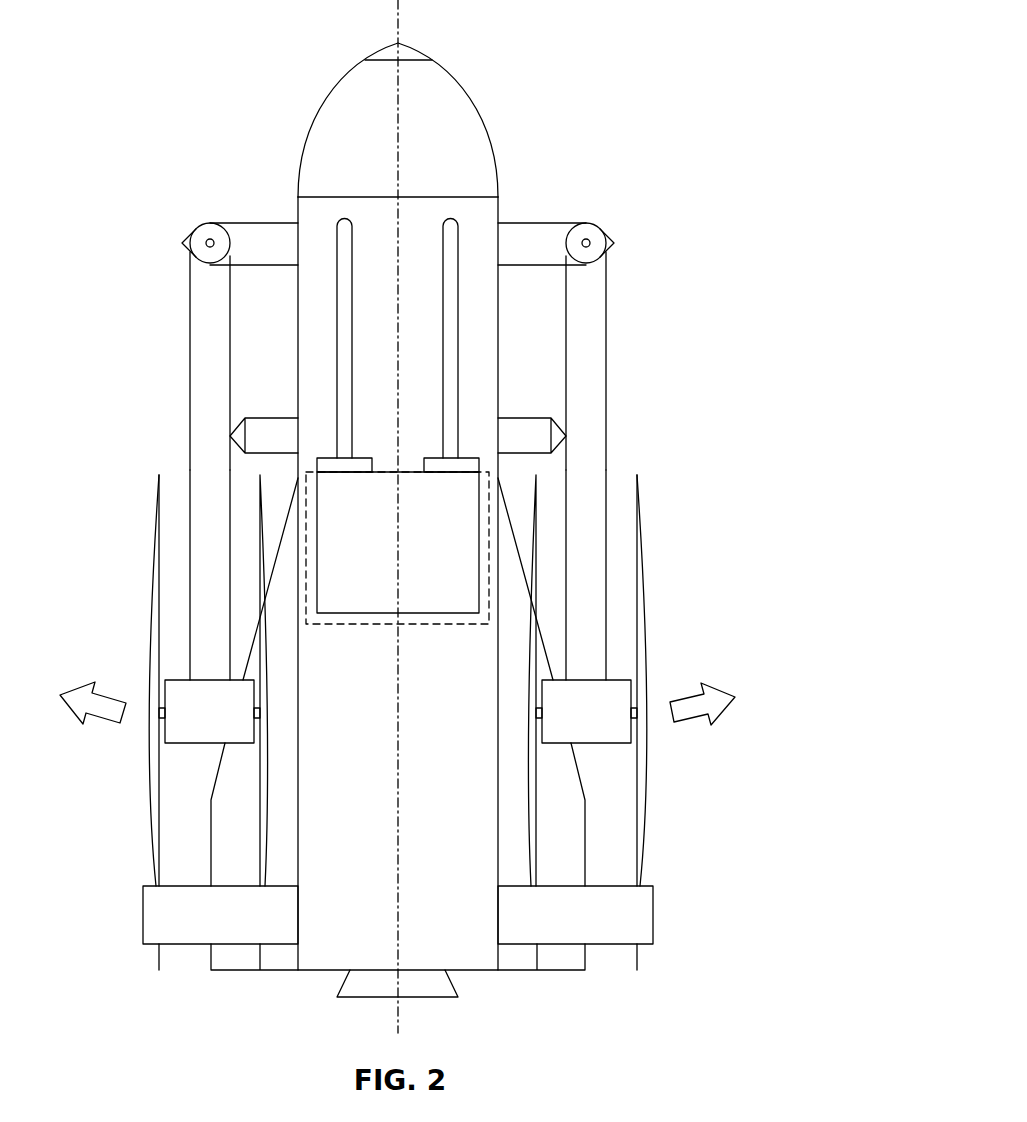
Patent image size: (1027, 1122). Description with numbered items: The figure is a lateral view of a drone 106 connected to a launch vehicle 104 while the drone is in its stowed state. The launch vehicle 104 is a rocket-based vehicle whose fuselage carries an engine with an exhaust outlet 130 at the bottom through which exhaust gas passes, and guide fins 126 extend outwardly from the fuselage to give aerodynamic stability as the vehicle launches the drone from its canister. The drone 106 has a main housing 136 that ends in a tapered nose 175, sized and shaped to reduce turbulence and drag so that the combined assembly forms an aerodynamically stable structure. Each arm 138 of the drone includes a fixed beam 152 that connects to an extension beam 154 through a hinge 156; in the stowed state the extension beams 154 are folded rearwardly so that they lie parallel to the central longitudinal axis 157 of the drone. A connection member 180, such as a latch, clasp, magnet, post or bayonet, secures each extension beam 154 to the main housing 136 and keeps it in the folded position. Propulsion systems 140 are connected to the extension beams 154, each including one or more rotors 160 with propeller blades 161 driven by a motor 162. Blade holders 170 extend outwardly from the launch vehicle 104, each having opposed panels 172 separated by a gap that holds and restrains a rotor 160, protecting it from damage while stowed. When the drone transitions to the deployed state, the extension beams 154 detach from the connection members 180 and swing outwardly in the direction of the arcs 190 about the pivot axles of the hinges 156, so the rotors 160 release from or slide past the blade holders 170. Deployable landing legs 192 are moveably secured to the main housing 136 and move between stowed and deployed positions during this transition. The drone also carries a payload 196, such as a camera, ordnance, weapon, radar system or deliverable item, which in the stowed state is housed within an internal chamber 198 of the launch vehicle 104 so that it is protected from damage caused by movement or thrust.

The launch vehicle 104 is at (470, 942).
The drone 106 is at (480, 108).
The guide fins 126 is at (566, 836).
The exhaust outlet 130 is at (373, 1000).
The main housing 136 is at (503, 195).
The arms 138 is at (190, 330).
The propulsion systems 140 is at (136, 826).
The fixed beam 152 is at (263, 222).
The extension beam 154 is at (190, 461).
The hinge 156 is at (198, 228).
The central longitudinal axis 157 is at (400, 87).
The rotors 160 is at (154, 590).
The propeller blades 161 is at (154, 527).
The motor 162 is at (195, 732).
The blade holders 170 is at (165, 914).
The opposed panels 172 is at (212, 930).
The tapered nose 175 is at (386, 44).
The connection member 180 is at (232, 436).
The arcs 190 is at (88, 724).
The deployable landing legs 192 is at (464, 250).
The payload 196 is at (430, 615).
The internal chamber 198 is at (487, 611).